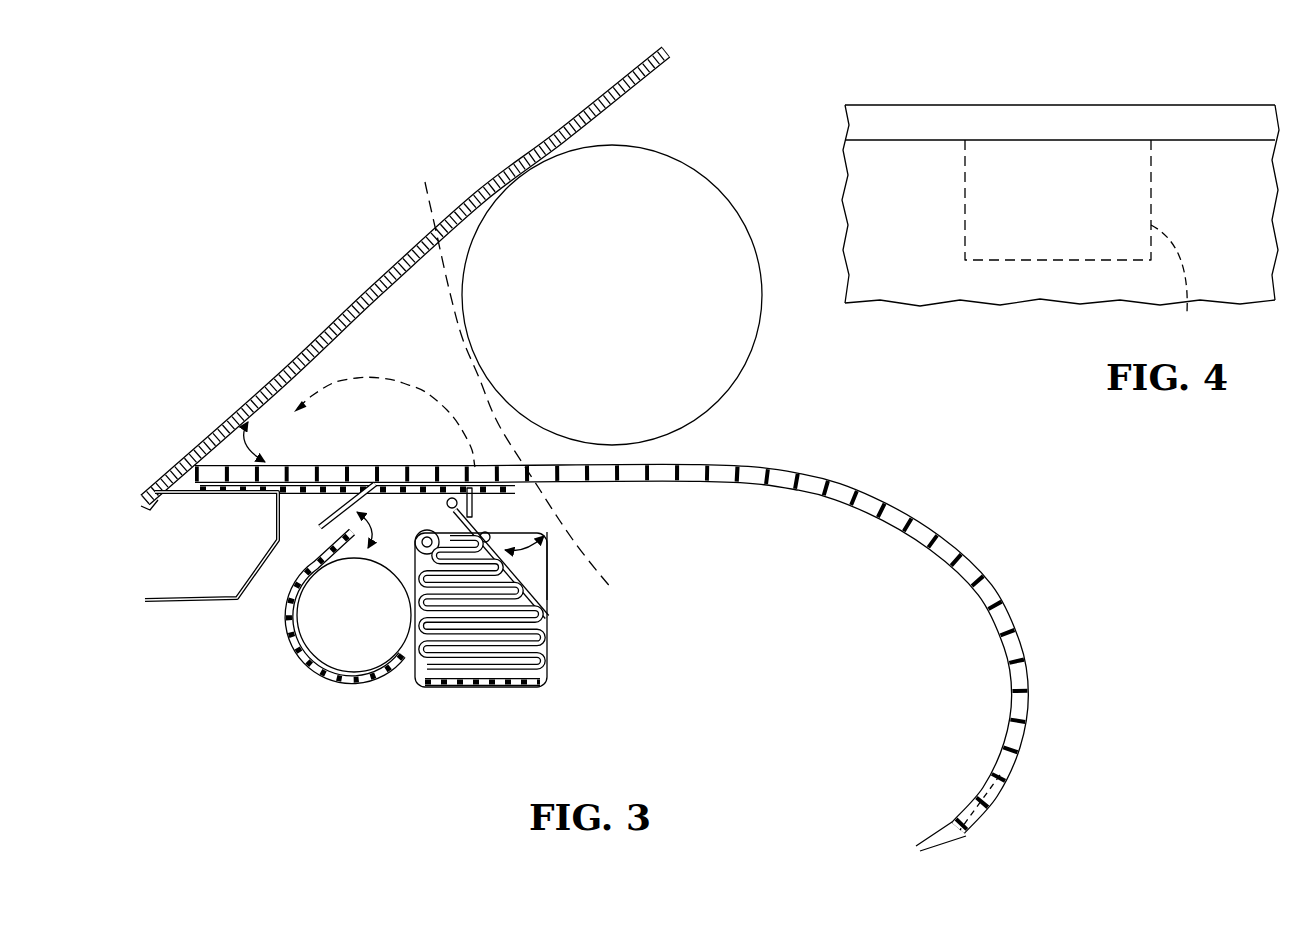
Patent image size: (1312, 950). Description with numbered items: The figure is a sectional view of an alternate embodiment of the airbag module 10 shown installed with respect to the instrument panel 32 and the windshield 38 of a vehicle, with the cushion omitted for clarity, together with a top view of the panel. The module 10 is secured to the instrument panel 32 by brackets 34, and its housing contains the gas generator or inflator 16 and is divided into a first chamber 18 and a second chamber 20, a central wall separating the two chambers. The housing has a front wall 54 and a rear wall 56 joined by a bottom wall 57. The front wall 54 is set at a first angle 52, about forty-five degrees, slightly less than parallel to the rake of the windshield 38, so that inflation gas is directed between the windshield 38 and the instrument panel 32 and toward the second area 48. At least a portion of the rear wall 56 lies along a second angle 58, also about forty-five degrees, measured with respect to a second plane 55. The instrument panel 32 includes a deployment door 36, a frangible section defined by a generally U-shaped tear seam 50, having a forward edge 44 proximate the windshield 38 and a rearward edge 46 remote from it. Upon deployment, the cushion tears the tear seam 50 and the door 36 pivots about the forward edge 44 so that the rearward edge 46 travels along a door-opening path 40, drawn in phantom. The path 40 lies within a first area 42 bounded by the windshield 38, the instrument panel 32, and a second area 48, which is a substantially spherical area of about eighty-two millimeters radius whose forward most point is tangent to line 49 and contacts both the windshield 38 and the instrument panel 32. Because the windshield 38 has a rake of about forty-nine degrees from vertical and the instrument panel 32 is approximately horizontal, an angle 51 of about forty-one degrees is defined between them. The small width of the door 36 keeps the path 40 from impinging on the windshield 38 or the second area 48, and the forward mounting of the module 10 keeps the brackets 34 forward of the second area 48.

In FIG. 3, the airbag module 10 is at (277, 672).
In FIG. 3, the inflator 16 is at (366, 625).
In FIG. 3, the first chamber 18 is at (397, 548).
In FIG. 3, the second chamber 20 is at (508, 660).
In FIG. 3, the instrument panel 32 is at (926, 507).
In FIG. 4, the instrument panel 32 is at (1262, 282).
In FIG. 3, the brackets 34 is at (317, 524).
In FIG. 3, the deployment door 36 is at (353, 467).
In FIG. 4, the deployment door 36 is at (1033, 213).
In FIG. 3, the windshield 38 is at (522, 162).
In FIG. 4, the windshield 38 is at (1225, 108).
In FIG. 3, the door-opening path 40 is at (403, 381).
In FIG. 3, the first area 42 is at (376, 326).
In FIG. 3, the forward edge 44 is at (305, 467).
In FIG. 4, the forward edge 44 is at (1025, 140).
In FIG. 3, the rearward edge 46 is at (482, 467).
In FIG. 4, the rearward edge 46 is at (1047, 262).
In FIG. 3, the second area 48 is at (699, 172).
In FIG. 3, the line 49 is at (552, 513).
In FIG. 4, the tear seam 50 is at (1177, 281).
In FIG. 3, the angle 51 is at (218, 432).
In FIG. 3, the first angle 52 is at (322, 538).
In FIG. 3, the front wall 54 is at (305, 570).
In FIG. 3, the second plane 55 is at (547, 592).
In FIG. 3, the rear wall 56 is at (537, 627).
In FIG. 3, the bottom wall 57 is at (427, 682).
In FIG. 3, the second angle 58 is at (547, 573).